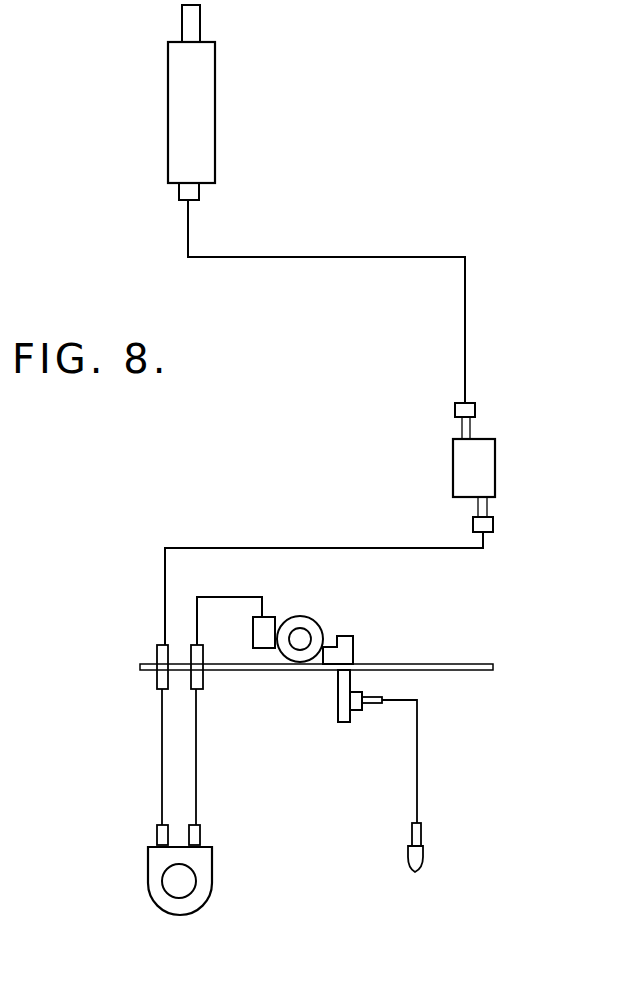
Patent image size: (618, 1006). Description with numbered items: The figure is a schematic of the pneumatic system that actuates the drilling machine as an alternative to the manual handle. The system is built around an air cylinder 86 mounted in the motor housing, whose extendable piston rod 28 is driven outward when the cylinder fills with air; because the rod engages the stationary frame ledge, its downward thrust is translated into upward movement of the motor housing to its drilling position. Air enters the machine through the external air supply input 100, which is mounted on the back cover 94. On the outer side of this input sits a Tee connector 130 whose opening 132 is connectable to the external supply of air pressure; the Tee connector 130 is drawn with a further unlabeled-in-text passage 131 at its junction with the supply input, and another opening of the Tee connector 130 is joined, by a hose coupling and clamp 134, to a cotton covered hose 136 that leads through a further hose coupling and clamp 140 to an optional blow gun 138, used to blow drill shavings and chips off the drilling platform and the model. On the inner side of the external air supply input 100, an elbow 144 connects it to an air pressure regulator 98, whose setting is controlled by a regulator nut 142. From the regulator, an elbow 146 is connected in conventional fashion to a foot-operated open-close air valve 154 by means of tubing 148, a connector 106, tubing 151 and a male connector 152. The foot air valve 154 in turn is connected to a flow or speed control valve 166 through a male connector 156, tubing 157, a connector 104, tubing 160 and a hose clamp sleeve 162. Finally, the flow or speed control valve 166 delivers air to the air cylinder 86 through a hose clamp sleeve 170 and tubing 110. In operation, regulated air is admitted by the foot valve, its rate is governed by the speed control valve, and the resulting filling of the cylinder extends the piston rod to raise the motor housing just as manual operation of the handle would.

The piston rod 28 is at (190, 22).
The air cylinder 86 is at (204, 116).
The tubing 110 is at (345, 258).
The hose clamp sleeve 170 is at (455, 406).
The flow or speed control valve 166 is at (480, 486).
The hose clamp sleeve 162 is at (492, 524).
The tubing 160 is at (218, 547).
The connector 104 is at (157, 680).
The connector 106 is at (198, 682).
The tubing 148 is at (222, 632).
The elbow 146 is at (264, 630).
The air pressure regulator 98 is at (303, 615).
The regulator nut 142 is at (305, 638).
The elbow 144 is at (345, 652).
The back cover 94 is at (470, 672).
The external air supply input 100 is at (336, 675).
The passage 131 is at (338, 678).
The Tee connector 130 is at (346, 703).
The opening 132 is at (345, 722).
The hose coupling and clamp 134 is at (372, 706).
The cotton covered hose 136 is at (417, 785).
The hose coupling and clamp 140 is at (421, 830).
The blow gun 138 is at (421, 858).
The tubing 157 is at (160, 783).
The tubing 151 is at (197, 740).
The male connector 156 is at (157, 833).
The male connector 152 is at (200, 836).
The foot air valve 154 is at (148, 885).